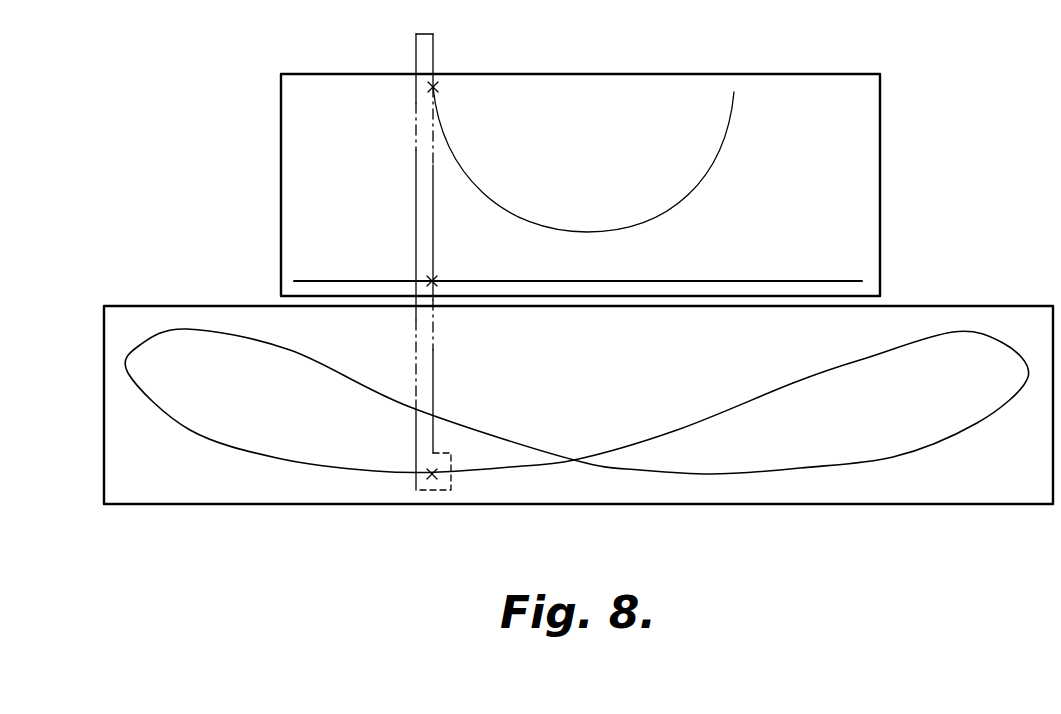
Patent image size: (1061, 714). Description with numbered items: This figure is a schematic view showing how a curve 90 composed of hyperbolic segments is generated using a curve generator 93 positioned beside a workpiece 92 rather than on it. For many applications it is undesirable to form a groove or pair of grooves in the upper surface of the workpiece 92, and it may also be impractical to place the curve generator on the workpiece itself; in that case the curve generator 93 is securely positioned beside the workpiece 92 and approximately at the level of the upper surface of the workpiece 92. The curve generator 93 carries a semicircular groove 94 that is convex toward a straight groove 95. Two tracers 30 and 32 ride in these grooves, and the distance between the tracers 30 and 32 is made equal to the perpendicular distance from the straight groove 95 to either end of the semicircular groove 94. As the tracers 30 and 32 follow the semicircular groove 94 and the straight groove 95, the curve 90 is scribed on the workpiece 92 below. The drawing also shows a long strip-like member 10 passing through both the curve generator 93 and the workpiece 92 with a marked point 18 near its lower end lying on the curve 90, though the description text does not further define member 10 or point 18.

The strip member 10 is at (416, 103).
The lower reference point 18 is at (432, 474).
The tracer 30 is at (437, 86).
The tracer 32 is at (432, 281).
The curve 90 is at (277, 458).
The workpiece 92 is at (140, 304).
The curve generator 93 is at (281, 132).
The semicircular groove 94 is at (735, 110).
The straight groove 95 is at (837, 282).